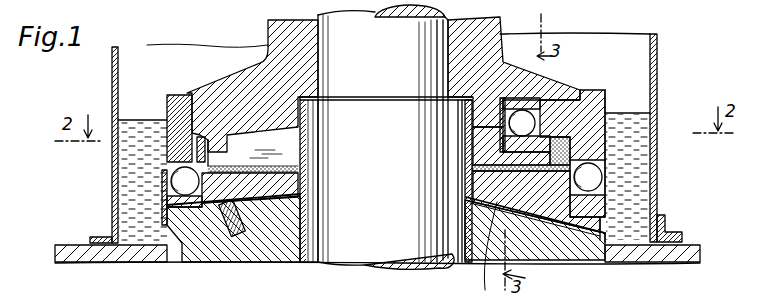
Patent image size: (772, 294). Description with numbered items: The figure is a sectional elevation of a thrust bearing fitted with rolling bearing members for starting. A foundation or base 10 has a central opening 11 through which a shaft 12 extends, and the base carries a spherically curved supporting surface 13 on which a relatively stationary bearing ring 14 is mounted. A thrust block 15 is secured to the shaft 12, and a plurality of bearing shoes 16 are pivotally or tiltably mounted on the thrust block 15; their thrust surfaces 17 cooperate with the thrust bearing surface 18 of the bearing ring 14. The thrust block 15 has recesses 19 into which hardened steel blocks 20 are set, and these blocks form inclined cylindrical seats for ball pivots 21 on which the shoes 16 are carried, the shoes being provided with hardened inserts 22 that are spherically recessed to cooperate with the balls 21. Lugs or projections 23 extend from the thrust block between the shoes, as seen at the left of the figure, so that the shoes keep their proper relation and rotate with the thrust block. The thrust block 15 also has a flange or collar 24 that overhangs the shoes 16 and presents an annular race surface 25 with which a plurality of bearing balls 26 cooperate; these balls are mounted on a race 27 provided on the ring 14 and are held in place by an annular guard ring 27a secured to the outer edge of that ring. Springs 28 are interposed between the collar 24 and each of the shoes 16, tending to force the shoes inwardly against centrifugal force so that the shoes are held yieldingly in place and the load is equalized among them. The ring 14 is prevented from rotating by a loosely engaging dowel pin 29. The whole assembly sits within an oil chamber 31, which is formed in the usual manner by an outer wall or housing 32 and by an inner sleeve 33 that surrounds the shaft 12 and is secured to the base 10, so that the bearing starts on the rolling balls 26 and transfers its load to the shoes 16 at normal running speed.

The foundation or base 10 is at (541, 247).
The central opening 11 is at (462, 262).
The shaft 12 is at (365, 253).
The spherically curved supporting surface 13 is at (578, 225).
The bearing ring 14 is at (612, 218).
The thrust block 15 is at (282, 33).
The bearing shoes 16 is at (478, 151).
The thrust surfaces 17 is at (478, 168).
The thrust bearing surface 18 is at (468, 197).
The recesses 19 is at (552, 97).
The blocks 20 is at (505, 100).
The ball pivots 21 is at (528, 122).
The hardened inserts 22 is at (465, 140).
The lugs or projections 23 is at (250, 133).
The flange or collar 24 is at (570, 142).
The annular race surface 25 is at (625, 150).
The bearing balls 26 is at (595, 173).
The race 27 is at (610, 192).
The annular guard ring 27a is at (167, 199).
The springs 28 is at (573, 152).
The dowel pin 29 is at (230, 222).
The oil chamber 31 is at (647, 55).
The outer wall or housing 32 is at (605, 238).
The inner sleeve 33 is at (468, 211).